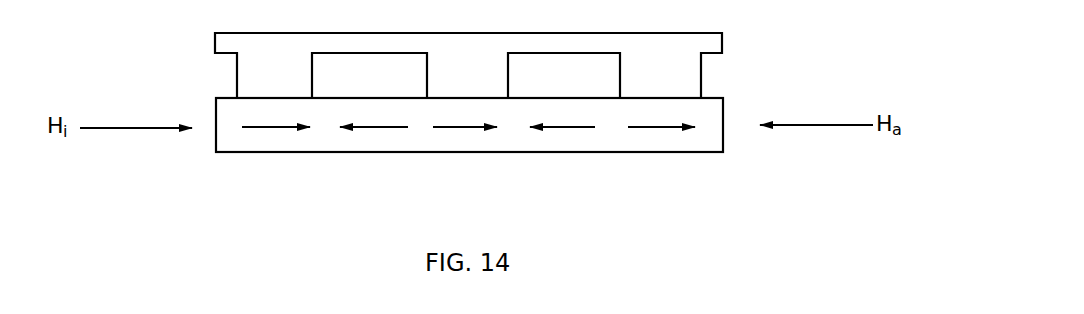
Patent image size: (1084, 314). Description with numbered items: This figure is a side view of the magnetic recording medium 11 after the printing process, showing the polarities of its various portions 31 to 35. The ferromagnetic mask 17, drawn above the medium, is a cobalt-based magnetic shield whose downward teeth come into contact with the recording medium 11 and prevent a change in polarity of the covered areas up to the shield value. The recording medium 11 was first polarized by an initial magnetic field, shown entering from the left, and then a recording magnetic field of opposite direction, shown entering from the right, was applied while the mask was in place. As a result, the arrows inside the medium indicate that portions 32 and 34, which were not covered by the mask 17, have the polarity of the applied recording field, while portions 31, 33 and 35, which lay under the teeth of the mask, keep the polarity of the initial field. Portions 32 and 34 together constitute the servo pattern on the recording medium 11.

The magnetic recording medium 11 is at (707, 145).
The ferromagnetic mask 17 is at (712, 37).
The portion of recording medium 31 is at (272, 127).
The portion of recording medium 32 is at (382, 127).
The portion of recording medium 33 is at (463, 127).
The portion of recording medium 34 is at (577, 127).
The portion of recording medium 35 is at (662, 127).